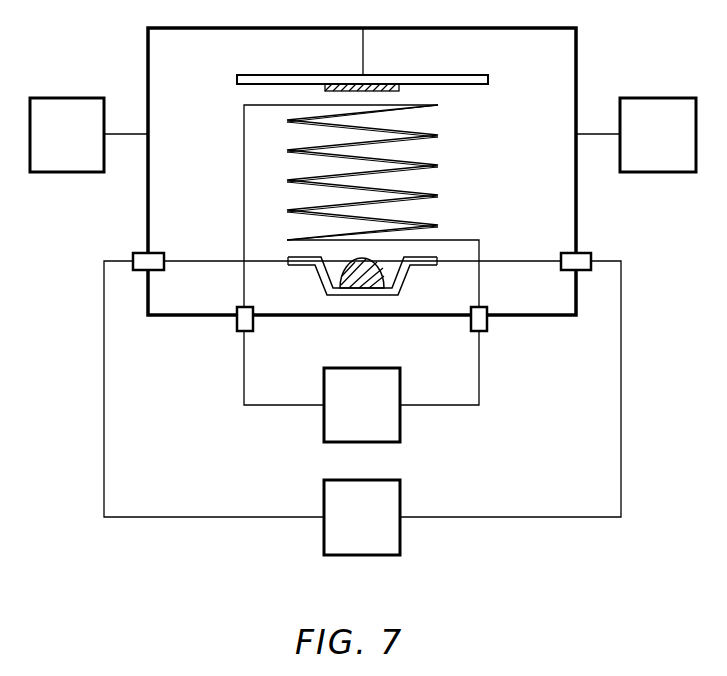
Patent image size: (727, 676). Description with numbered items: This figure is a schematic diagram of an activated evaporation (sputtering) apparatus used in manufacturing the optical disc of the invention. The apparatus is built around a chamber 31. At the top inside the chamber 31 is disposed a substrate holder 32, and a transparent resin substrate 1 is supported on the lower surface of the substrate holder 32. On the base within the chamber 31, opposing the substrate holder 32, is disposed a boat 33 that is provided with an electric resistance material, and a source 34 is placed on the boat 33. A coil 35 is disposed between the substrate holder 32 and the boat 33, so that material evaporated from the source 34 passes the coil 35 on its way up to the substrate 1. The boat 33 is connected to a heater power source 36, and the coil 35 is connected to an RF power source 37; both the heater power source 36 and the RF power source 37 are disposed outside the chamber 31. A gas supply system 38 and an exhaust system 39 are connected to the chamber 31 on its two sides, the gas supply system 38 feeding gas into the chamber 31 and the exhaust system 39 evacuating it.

The transparent resin substrate 1 is at (402, 89).
The chamber 31 is at (292, 27).
The substrate holder 32 is at (475, 72).
The boat 33 is at (420, 262).
The source 34 is at (347, 272).
The coil 35 is at (422, 163).
The heater power source 36 is at (390, 502).
The RF power source 37 is at (371, 372).
The gas supply system 38 is at (66, 104).
The exhaust system 39 is at (665, 104).